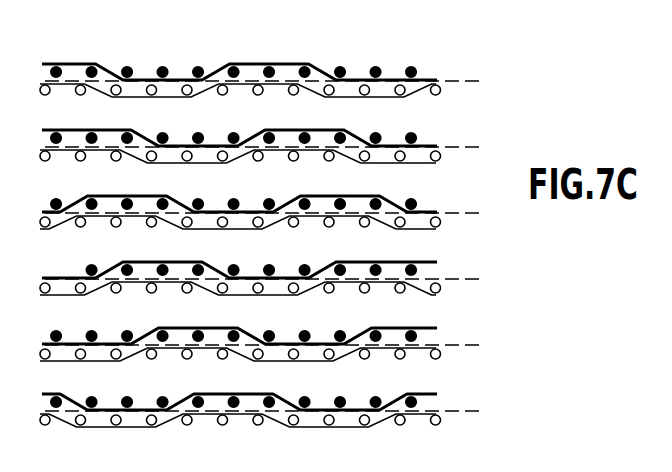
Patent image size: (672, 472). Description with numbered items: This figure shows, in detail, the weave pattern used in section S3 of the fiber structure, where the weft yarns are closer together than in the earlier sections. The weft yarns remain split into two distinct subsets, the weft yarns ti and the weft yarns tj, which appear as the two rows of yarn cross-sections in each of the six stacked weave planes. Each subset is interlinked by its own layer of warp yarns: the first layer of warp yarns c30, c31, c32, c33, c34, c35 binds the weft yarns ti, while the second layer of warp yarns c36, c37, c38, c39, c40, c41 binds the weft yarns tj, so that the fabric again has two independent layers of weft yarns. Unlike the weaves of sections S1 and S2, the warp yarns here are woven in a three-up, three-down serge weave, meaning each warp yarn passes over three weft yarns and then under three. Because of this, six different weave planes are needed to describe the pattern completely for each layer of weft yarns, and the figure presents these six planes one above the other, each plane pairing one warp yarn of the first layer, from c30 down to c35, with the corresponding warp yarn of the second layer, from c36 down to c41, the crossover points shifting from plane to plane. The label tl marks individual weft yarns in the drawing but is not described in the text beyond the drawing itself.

The warp yarn c30 is at (436, 79).
The warp yarn c31 is at (436, 146).
The warp yarn c32 is at (436, 212).
The warp yarn c33 is at (437, 262).
The warp yarn c34 is at (436, 328).
The warp yarn c35 is at (437, 394).
The warp yarn c36 is at (436, 86).
The warp yarn c37 is at (436, 164).
The warp yarn c38 is at (436, 230).
The warp yarn c39 is at (436, 296).
The warp yarn c40 is at (436, 350).
The warp yarn c41 is at (436, 416).
The warp thread t_l tl is at (199, 66).
The weft yarns ti is at (232, 197).
The weft yarns tj is at (294, 95).